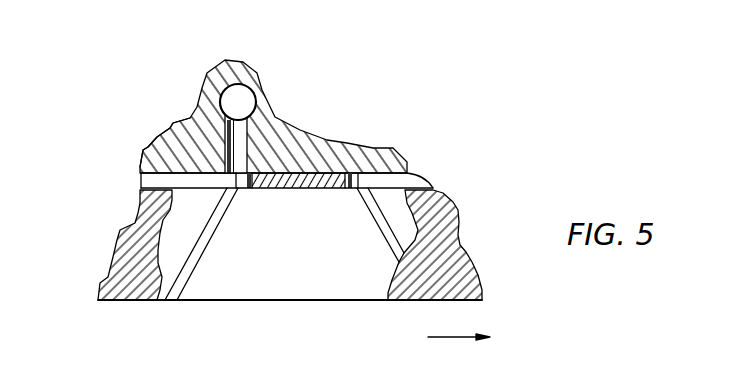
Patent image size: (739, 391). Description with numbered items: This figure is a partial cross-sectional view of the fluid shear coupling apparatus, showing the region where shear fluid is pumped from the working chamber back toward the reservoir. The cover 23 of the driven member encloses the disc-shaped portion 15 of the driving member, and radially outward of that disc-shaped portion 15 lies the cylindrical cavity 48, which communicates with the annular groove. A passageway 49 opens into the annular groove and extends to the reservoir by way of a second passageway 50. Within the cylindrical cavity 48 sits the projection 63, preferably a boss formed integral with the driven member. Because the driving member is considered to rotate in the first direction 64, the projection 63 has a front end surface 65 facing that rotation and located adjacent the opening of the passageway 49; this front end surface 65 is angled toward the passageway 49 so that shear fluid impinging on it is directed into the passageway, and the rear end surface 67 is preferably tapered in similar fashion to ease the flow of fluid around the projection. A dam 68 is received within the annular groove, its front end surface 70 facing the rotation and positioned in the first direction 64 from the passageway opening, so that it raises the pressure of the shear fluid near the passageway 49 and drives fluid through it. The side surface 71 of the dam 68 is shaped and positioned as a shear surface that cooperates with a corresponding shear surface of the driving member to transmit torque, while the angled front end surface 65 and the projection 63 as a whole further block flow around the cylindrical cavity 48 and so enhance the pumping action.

The disc-shaped portion 15 is at (127, 262).
The cover 23 is at (200, 112).
The cylindrical cavity 48 is at (150, 182).
The passageway 49 is at (237, 146).
The second passageway 50 is at (238, 98).
The projection 63 is at (296, 290).
The first direction 64 is at (455, 337).
The front end surface 65 is at (200, 260).
The rear end surface 67 is at (370, 210).
The dam 68 is at (305, 182).
The front end surface 70 is at (170, 167).
The side surface 71 is at (285, 190).